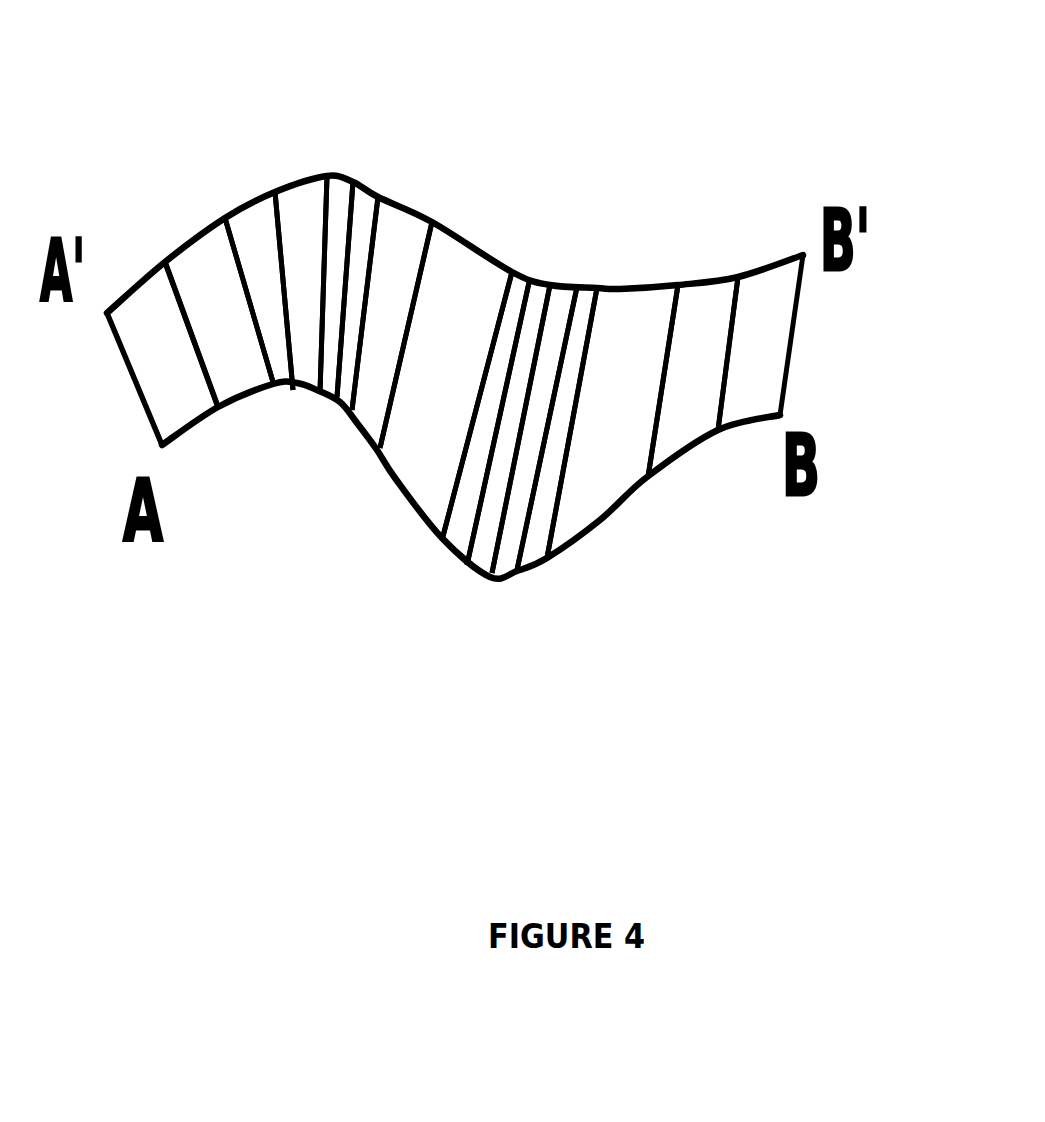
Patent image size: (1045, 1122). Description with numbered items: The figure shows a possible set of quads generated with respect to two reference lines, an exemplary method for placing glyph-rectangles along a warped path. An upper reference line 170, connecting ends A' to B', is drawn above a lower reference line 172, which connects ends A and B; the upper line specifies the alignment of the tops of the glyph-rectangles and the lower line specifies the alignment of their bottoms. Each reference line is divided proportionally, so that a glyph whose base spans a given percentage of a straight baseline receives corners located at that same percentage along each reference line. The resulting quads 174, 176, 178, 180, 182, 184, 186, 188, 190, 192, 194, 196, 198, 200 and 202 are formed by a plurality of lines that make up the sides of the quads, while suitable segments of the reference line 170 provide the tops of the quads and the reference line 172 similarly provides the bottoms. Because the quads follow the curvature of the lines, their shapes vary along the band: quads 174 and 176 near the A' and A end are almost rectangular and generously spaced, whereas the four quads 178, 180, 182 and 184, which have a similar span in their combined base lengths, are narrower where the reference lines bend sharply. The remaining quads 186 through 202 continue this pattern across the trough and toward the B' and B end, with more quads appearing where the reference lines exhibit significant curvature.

The reference line 170 is at (640, 285).
The reference line 172 is at (408, 512).
The quad 174 is at (180, 362).
The quad 176 is at (215, 260).
The quad 178 is at (255, 222).
The quad 180 is at (305, 208).
The quad 182 is at (345, 193).
The quad 184 is at (370, 218).
The quad 186 is at (422, 230).
The quad 188 is at (475, 283).
The quad 190 is at (463, 538).
The quad 192 is at (483, 550).
The quad 194 is at (508, 550).
The quad 196 is at (535, 550).
The quad 198 is at (612, 487).
The quad 200 is at (702, 323).
The quad 202 is at (760, 397).